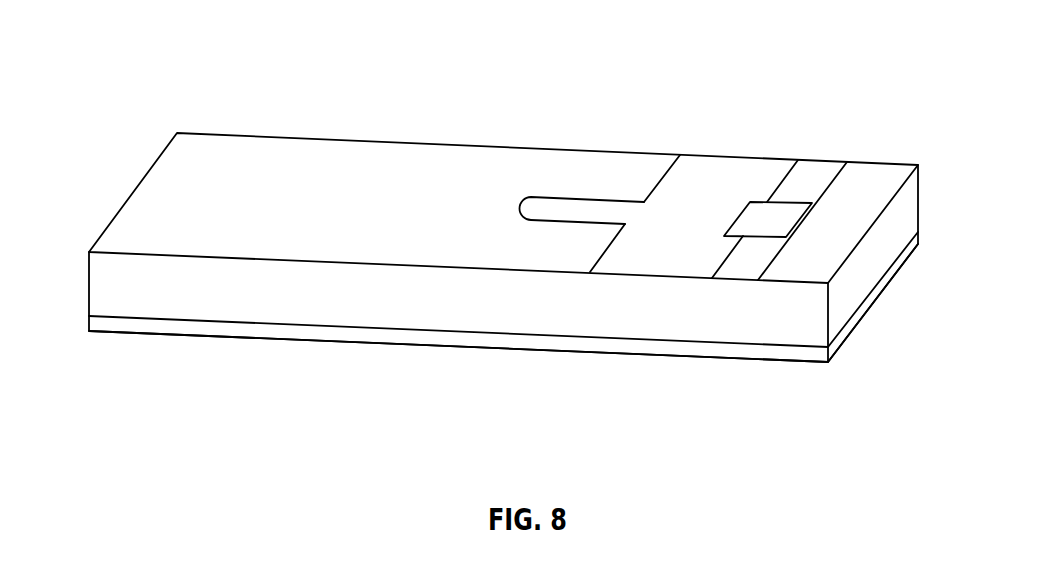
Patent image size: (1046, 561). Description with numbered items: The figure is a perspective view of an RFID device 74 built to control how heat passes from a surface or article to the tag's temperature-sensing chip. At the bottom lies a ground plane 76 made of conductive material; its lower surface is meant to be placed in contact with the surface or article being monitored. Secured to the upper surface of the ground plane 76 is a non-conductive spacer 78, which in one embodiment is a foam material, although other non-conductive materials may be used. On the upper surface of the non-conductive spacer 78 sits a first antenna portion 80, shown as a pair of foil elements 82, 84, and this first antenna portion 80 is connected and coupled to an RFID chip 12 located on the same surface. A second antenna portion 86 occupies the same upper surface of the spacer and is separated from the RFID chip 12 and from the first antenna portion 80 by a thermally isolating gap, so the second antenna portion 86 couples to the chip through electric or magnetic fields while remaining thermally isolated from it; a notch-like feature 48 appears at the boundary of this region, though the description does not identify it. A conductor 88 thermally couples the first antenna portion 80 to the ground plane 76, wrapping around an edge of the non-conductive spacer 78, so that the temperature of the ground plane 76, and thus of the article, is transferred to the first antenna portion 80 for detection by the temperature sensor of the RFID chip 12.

The RFID device 74 is at (311, 83).
The ground plane 76 is at (490, 348).
The non-conductive spacer 78 is at (113, 283).
The second antenna portion 86 is at (461, 158).
The first antenna portion 80 is at (702, 154).
The slot 48 is at (655, 180).
The foil element 82 is at (742, 165).
The foil element 84 is at (880, 173).
The RFID chip 12 is at (782, 213).
The conductor 88 is at (905, 213).